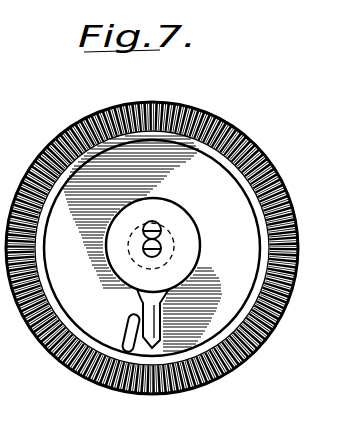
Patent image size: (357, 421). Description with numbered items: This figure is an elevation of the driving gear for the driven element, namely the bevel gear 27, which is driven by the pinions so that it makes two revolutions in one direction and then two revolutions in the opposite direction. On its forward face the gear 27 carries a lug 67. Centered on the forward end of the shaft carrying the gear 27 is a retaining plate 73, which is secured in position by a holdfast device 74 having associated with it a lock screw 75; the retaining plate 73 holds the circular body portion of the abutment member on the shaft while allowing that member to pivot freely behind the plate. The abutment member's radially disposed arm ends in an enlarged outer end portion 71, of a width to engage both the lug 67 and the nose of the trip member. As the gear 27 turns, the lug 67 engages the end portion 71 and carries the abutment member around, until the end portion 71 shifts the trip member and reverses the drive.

The bevel gear 27 is at (240, 278).
The retaining plate 73 is at (190, 250).
The holdfast device 74 is at (163, 244).
The lock screw 75 is at (158, 223).
The enlarged outer end portion 71 is at (180, 335).
The lug 67 is at (128, 334).